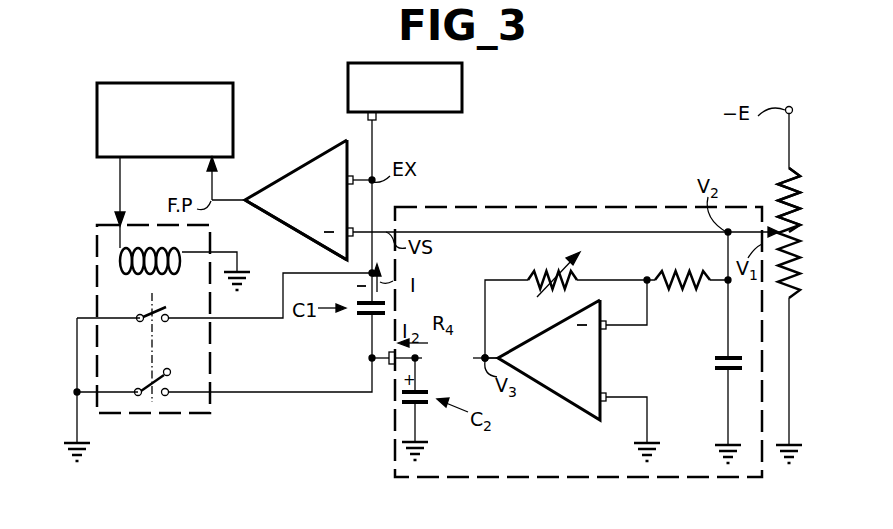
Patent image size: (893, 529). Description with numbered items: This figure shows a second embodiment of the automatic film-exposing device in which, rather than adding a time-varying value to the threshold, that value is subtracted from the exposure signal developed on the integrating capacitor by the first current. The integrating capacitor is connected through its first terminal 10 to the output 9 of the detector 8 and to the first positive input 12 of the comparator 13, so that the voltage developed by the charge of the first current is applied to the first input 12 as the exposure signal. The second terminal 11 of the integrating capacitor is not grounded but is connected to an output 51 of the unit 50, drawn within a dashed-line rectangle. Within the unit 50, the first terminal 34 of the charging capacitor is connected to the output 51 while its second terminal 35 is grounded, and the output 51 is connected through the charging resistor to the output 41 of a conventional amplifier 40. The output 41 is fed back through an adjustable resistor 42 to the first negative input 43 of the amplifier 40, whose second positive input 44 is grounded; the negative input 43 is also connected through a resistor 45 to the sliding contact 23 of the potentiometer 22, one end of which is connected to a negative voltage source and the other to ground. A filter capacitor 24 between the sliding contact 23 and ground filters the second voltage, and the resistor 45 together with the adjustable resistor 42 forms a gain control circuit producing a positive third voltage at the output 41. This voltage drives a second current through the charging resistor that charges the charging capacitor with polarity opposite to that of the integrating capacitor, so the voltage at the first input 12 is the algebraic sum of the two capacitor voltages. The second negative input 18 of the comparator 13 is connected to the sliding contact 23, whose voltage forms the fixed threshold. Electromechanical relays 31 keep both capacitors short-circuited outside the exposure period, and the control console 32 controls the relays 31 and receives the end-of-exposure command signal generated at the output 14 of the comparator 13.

The detector 8 is at (348, 76).
The output of the detector 9 is at (378, 118).
The first terminal of the integrating capacitor 10 is at (358, 302).
The second terminal of the integrating capacitor 11 is at (360, 315).
The first input of the comparator 12 is at (352, 172).
The comparator 13 is at (291, 230).
The output of the comparator 14 is at (248, 179).
The second input of the comparator 18 is at (360, 219).
The potentiometer 22 is at (810, 222).
The sliding contact of the potentiometer 23 is at (777, 240).
The filter capacitor 24 is at (718, 372).
The electromechanical relays 31 is at (95, 243).
The control console 32 is at (186, 83).
The first terminal of the charging capacitor 34 is at (427, 389).
The second terminal of the charging capacitor 35 is at (419, 404).
The amplifier 40 is at (556, 391).
The output of the amplifier 41 is at (500, 354).
The adjustable resistor 42 is at (532, 270).
The first input of the amplifier 43 is at (608, 328).
The second input of the amplifier 44 is at (607, 398).
The resistor 45 is at (679, 270).
The unit 50 is at (611, 208).
The output of the unit 51 is at (390, 368).